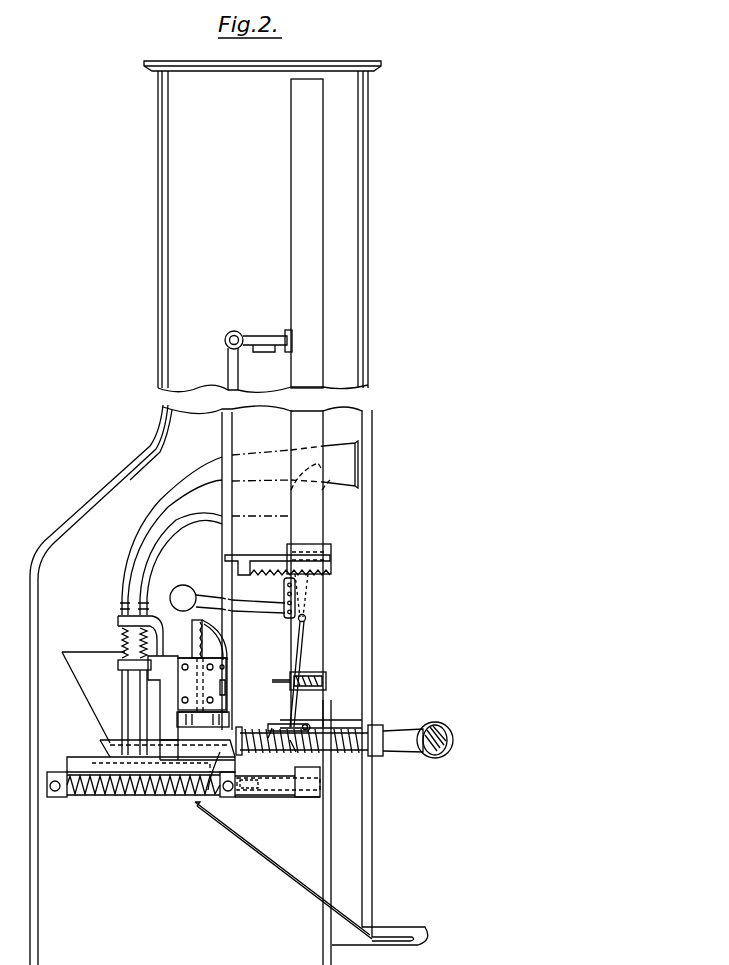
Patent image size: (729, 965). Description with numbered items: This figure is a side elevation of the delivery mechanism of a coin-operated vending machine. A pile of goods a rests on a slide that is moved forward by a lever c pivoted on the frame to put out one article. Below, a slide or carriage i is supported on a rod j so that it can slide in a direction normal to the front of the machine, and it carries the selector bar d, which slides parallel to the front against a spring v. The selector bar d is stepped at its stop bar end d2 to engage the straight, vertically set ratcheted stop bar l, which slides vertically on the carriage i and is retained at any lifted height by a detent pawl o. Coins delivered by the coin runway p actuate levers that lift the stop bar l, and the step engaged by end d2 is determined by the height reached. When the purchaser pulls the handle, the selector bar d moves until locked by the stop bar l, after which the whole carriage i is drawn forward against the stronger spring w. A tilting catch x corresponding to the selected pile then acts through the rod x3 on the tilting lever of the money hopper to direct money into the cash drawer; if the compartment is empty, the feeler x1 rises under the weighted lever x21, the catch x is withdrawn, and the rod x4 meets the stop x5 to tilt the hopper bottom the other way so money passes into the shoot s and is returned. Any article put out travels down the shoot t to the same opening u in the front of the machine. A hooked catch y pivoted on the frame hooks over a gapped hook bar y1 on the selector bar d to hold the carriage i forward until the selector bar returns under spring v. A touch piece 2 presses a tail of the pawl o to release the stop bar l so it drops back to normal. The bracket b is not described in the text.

The pile of goods a is at (307, 403).
The lever c is at (214, 443).
The coin runway p is at (240, 519).
The rack bracket b is at (248, 556).
The feeler x1 is at (315, 588).
The weighted lever x21 is at (259, 600).
The stop bar l is at (197, 642).
The detent pawl o is at (220, 657).
The touch piece 2 is at (281, 672).
The stepped stop bar end of selector bar d2 is at (185, 714).
The rod x3 is at (160, 755).
The slide or carriage i is at (71, 760).
The spring v is at (120, 780).
The selector bar d is at (158, 776).
The stop x5 is at (275, 790).
The tilting catch x is at (262, 728).
The hooked catch y is at (280, 722).
The spring w is at (393, 751).
The shoot t is at (321, 832).
The opening u is at (296, 870).
The rod x4 is at (190, 784).
The rod j is at (180, 762).
The hook bar y1 is at (226, 760).
The shoot s is at (277, 822).